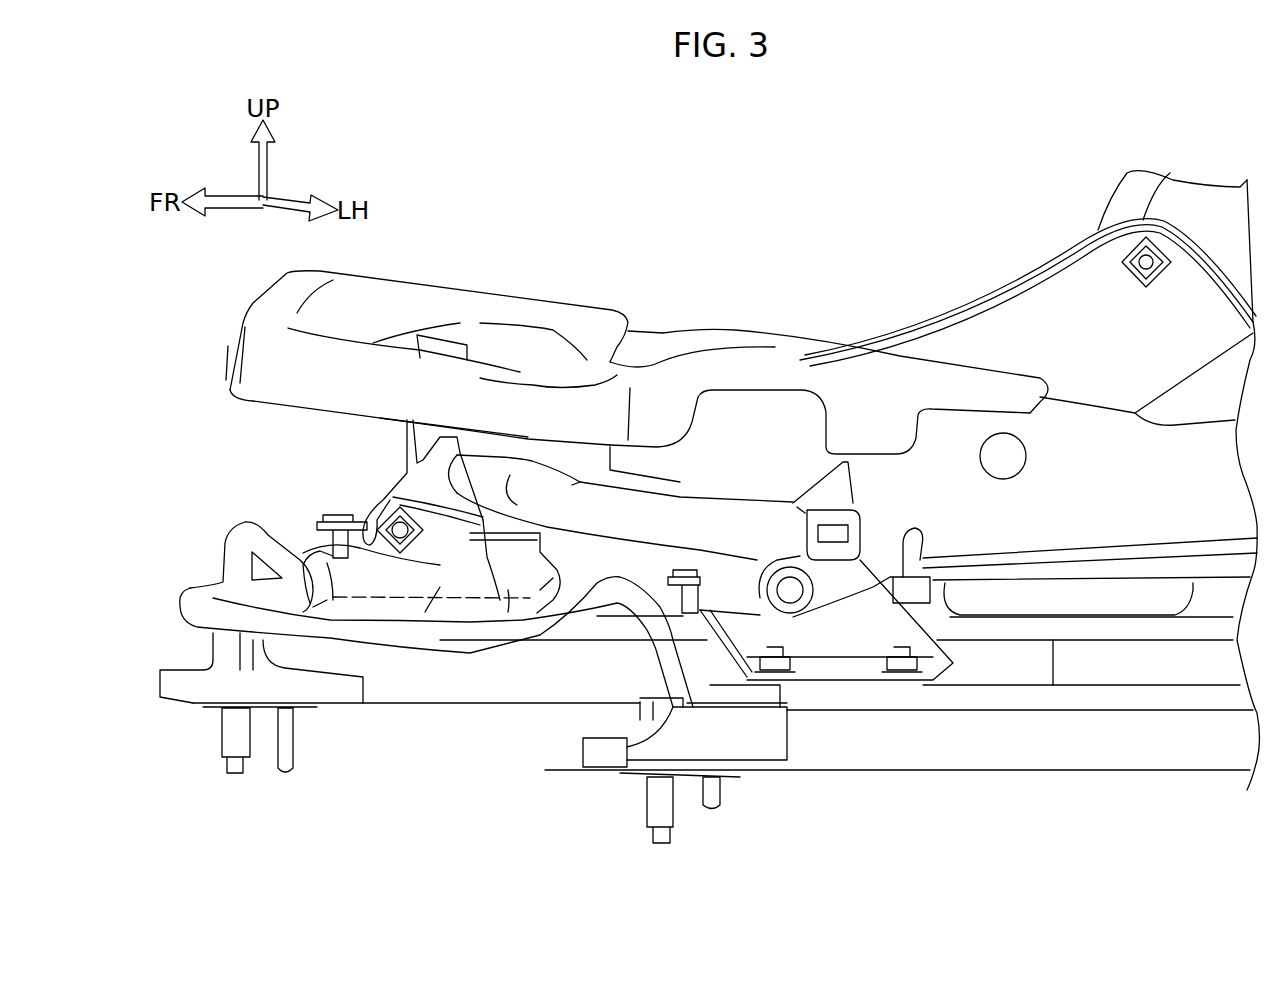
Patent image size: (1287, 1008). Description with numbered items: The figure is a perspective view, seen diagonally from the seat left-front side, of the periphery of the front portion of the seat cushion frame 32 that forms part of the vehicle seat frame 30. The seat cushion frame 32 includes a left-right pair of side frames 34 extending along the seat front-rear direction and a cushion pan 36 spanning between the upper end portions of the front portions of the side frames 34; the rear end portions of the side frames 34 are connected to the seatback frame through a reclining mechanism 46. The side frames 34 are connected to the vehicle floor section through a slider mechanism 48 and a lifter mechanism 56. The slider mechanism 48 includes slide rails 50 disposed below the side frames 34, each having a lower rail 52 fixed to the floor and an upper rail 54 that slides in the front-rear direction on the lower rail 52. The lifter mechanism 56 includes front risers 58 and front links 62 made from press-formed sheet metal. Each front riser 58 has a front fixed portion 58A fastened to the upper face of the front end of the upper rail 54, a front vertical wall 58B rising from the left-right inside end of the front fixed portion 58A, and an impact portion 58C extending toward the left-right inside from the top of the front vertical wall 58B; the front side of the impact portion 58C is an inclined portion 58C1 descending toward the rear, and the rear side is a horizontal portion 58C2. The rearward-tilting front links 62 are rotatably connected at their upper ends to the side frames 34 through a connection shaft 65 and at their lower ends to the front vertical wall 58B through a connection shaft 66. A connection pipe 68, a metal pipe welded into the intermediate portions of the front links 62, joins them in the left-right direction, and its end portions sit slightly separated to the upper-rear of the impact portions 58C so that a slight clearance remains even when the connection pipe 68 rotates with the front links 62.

The vehicle seat frame 30 is at (622, 210).
The seat cushion frame 32 is at (722, 306).
The side frames 34 is at (947, 320).
The cushion pan 36 is at (210, 338).
The reclining mechanism 46 is at (1062, 170).
The slider mechanism 48 is at (1192, 800).
The slide rails 50 is at (568, 708).
The lower rail 52 is at (592, 658).
The upper rail 54 is at (1120, 703).
The lifter mechanism 56 is at (262, 485).
The front risers 58 is at (400, 612).
The front fixed portion 58A is at (817, 682).
The front vertical wall 58B is at (357, 588).
The impact portion 58C is at (385, 766).
The inclined portion 58C1 is at (440, 587).
The horizontal portion 58C2 is at (508, 590).
The front links 62 is at (400, 500).
The connection shaft 65 is at (1005, 462).
The connection shaft 66 is at (365, 512).
The connection pipe 68 is at (675, 502).